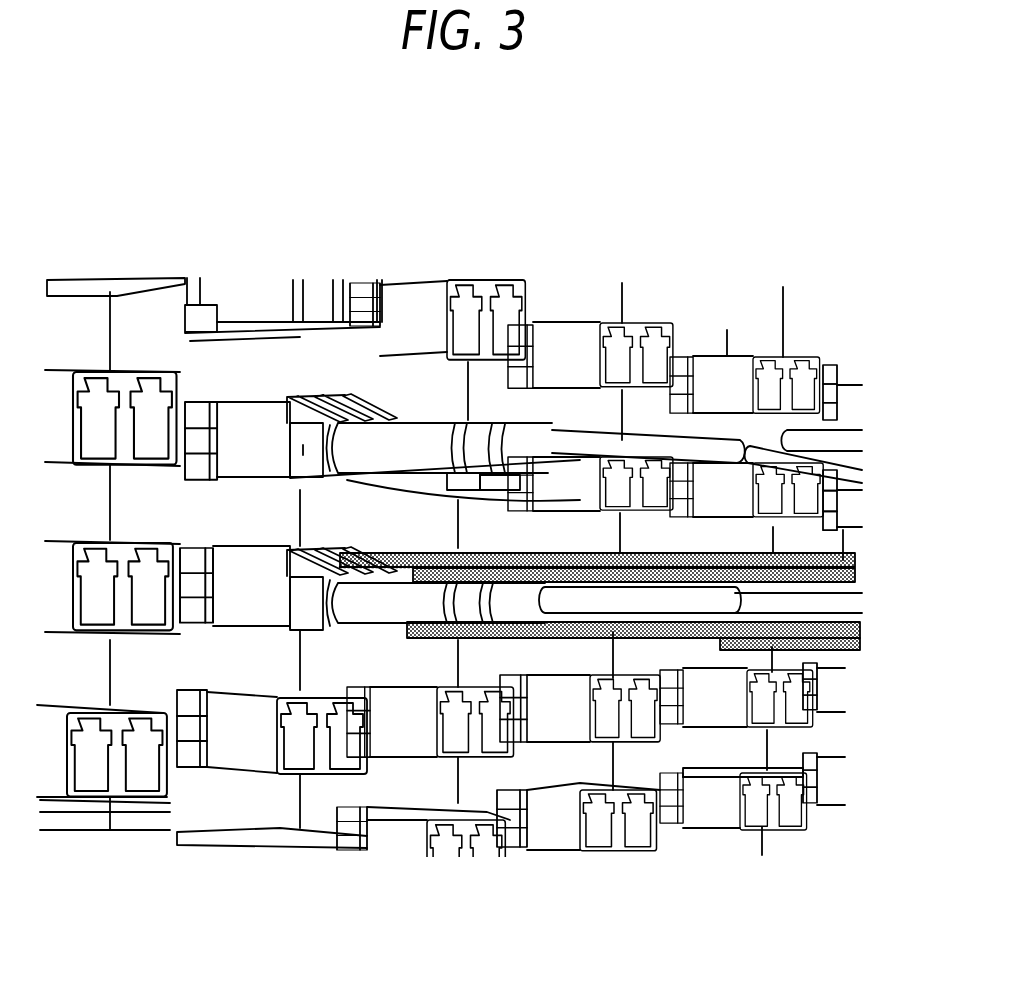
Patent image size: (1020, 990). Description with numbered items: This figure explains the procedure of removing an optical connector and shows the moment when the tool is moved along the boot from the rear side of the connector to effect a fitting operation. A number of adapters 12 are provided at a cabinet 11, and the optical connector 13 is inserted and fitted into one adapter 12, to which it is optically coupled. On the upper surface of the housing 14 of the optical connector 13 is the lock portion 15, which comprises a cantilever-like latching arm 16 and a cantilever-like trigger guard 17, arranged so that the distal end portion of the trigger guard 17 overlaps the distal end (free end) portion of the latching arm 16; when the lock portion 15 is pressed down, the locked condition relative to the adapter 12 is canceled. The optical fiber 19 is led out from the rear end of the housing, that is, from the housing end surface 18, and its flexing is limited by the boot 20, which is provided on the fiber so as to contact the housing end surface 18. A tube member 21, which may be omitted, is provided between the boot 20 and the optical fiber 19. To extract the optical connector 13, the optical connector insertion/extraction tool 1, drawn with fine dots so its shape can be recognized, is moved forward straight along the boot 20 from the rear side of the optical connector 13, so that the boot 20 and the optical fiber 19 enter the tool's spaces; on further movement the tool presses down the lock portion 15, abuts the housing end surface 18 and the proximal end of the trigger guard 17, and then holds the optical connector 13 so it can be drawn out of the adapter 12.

The optical connector insertion/extraction tool 1 is at (846, 558).
The cabinet 11 is at (565, 278).
The adapter 12 is at (510, 300).
The optical connector 13 is at (375, 313).
The housing 14 is at (312, 452).
The lock portion 15 is at (346, 286).
The latching arm 16 is at (294, 406).
The trigger guard 17 is at (340, 398).
The housing end surface 18 is at (330, 478).
The optical fiber 19 is at (790, 460).
The boot 20 is at (597, 388).
The tube member 21 is at (706, 447).